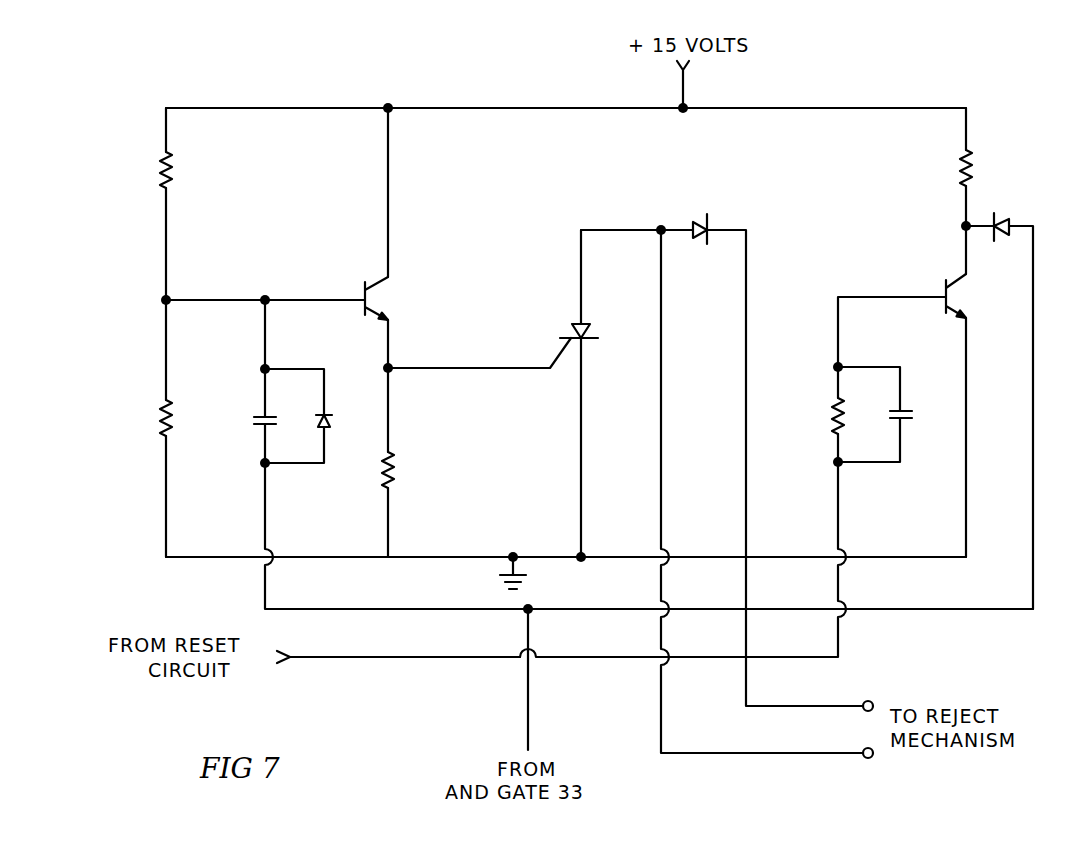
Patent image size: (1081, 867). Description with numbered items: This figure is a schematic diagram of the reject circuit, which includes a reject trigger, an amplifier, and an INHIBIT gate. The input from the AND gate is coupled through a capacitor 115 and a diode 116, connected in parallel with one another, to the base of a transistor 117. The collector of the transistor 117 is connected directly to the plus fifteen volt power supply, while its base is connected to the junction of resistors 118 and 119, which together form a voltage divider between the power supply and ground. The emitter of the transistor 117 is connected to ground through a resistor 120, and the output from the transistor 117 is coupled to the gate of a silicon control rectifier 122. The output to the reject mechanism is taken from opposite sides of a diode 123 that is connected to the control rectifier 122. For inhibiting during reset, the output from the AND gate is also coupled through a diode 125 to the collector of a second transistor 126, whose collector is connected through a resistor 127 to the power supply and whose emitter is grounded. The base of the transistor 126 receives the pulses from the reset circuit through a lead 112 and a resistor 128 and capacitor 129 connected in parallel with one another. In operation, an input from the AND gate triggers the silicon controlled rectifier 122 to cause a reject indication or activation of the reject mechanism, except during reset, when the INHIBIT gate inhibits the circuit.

The lead 112 is at (473, 663).
The capacitor 115 is at (251, 415).
The diode 116 is at (340, 423).
The transistor 117 is at (358, 285).
The resistor 118 is at (176, 181).
The resistor 119 is at (158, 420).
The resistor 120 is at (404, 470).
The silicon control rectifier 122 is at (552, 339).
The diode 123 is at (702, 210).
The diode 125 is at (1000, 209).
The transistor 126 is at (953, 273).
The resistor 127 is at (975, 172).
The resistor 128 is at (828, 428).
The capacitor 129 is at (919, 412).